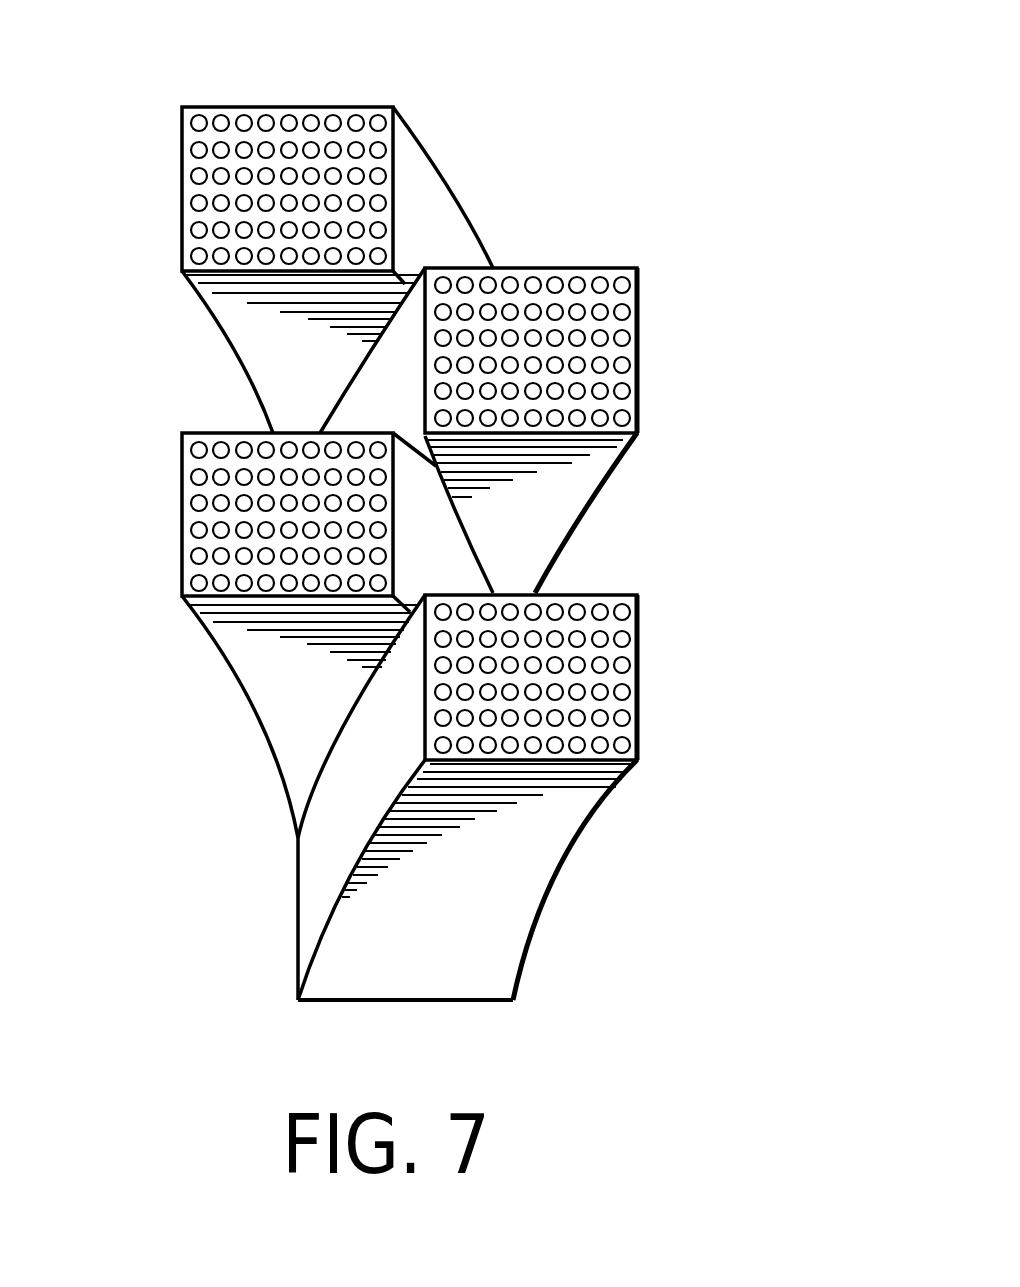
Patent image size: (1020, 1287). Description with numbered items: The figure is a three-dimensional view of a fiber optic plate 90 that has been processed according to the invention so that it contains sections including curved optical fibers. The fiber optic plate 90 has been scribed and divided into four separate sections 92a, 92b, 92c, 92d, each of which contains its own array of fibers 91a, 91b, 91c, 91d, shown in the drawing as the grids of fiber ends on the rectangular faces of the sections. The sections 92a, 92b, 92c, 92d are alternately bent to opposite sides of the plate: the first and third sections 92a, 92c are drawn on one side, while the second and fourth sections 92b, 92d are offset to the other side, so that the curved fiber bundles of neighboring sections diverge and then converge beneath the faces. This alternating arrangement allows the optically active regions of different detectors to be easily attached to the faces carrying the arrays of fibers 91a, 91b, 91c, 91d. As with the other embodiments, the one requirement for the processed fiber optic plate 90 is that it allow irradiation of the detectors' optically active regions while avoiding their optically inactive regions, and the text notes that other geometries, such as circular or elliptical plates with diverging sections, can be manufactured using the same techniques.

The fiber optic plate 90 is at (776, 287).
The array of fibers 91a is at (266, 122).
The array of fibers 91b is at (625, 418).
The array of fibers 91c is at (200, 582).
The array of fibers 91d is at (622, 740).
The section 92a is at (190, 190).
The section 92b is at (583, 270).
The section 92c is at (193, 515).
The section 92d is at (608, 600).